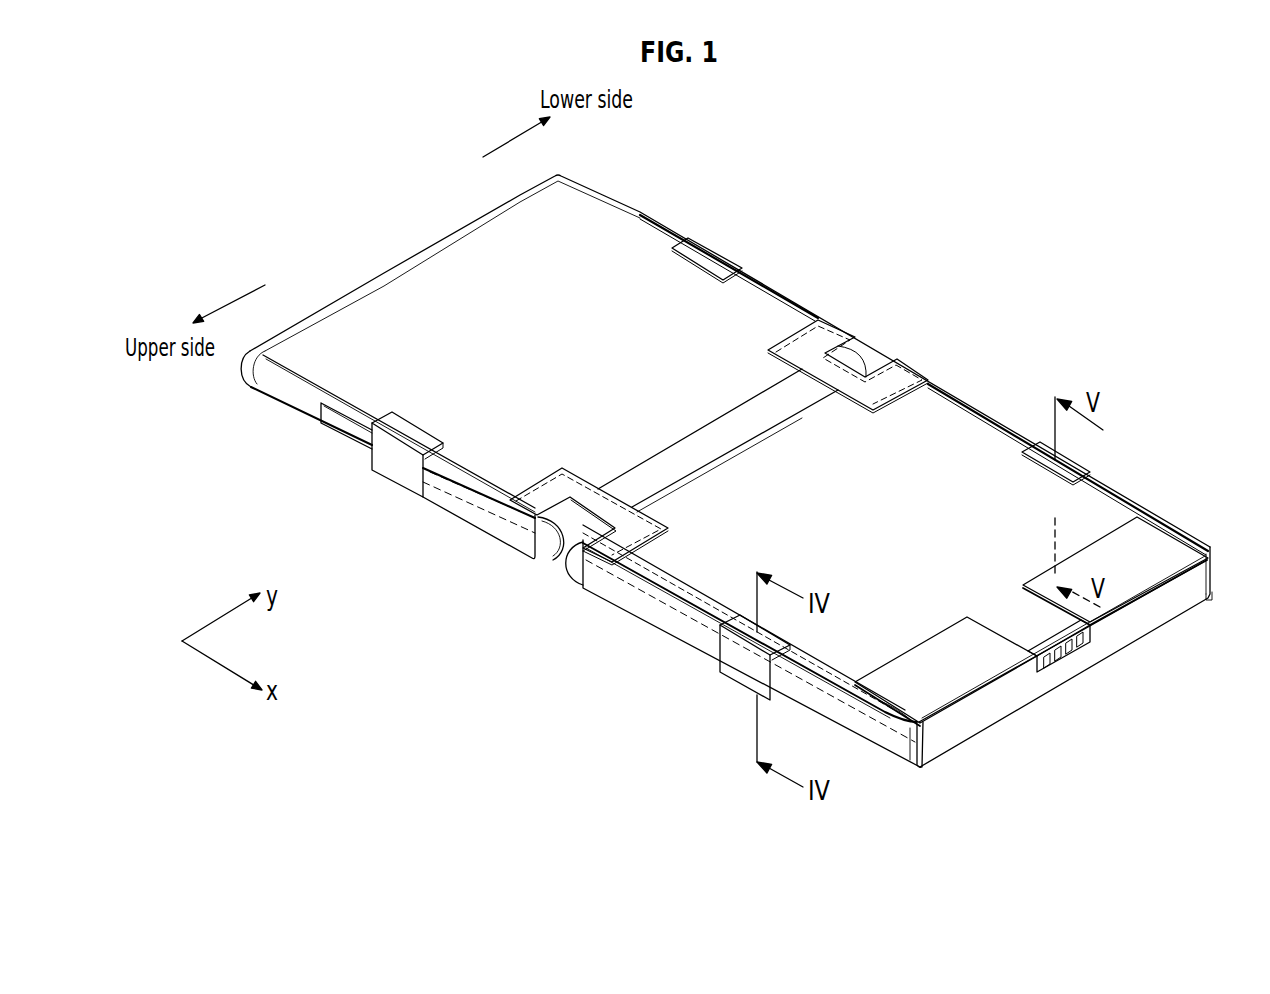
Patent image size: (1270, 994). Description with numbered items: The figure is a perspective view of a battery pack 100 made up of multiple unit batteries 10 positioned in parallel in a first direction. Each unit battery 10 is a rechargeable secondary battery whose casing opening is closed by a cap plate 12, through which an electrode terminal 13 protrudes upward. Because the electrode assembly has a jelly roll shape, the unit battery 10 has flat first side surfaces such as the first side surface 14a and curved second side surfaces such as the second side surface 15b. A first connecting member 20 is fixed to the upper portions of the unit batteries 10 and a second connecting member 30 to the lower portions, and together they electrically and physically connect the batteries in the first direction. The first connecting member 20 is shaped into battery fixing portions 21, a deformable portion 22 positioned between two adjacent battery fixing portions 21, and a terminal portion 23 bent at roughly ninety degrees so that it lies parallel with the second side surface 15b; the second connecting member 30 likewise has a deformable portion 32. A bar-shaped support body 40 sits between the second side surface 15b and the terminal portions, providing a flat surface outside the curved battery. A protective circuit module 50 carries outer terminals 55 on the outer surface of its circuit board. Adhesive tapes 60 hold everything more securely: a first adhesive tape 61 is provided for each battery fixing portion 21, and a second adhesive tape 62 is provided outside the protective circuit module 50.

The battery pack 100 is at (884, 149).
The unit battery 10 is at (646, 200).
The cap plate 12 is at (275, 395).
The electrode terminal 13 is at (348, 433).
The first side surface 14a is at (412, 281).
The second side surface 15b is at (694, 443).
The first connecting member 20 is at (510, 550).
The battery fixing portion 21 is at (478, 510).
The deformable portion 22 is at (575, 475).
The terminal portion 23 is at (903, 745).
The second connecting member 30 is at (921, 363).
The deformable portion 32 is at (830, 330).
The support body 40 is at (1032, 628).
The protective circuit module 50 is at (1045, 678).
The outer terminals 55 is at (1073, 655).
The adhesive tapes 60 is at (422, 760).
The first adhesive tape 61 is at (715, 260).
The second adhesive tape 62 is at (1140, 512).